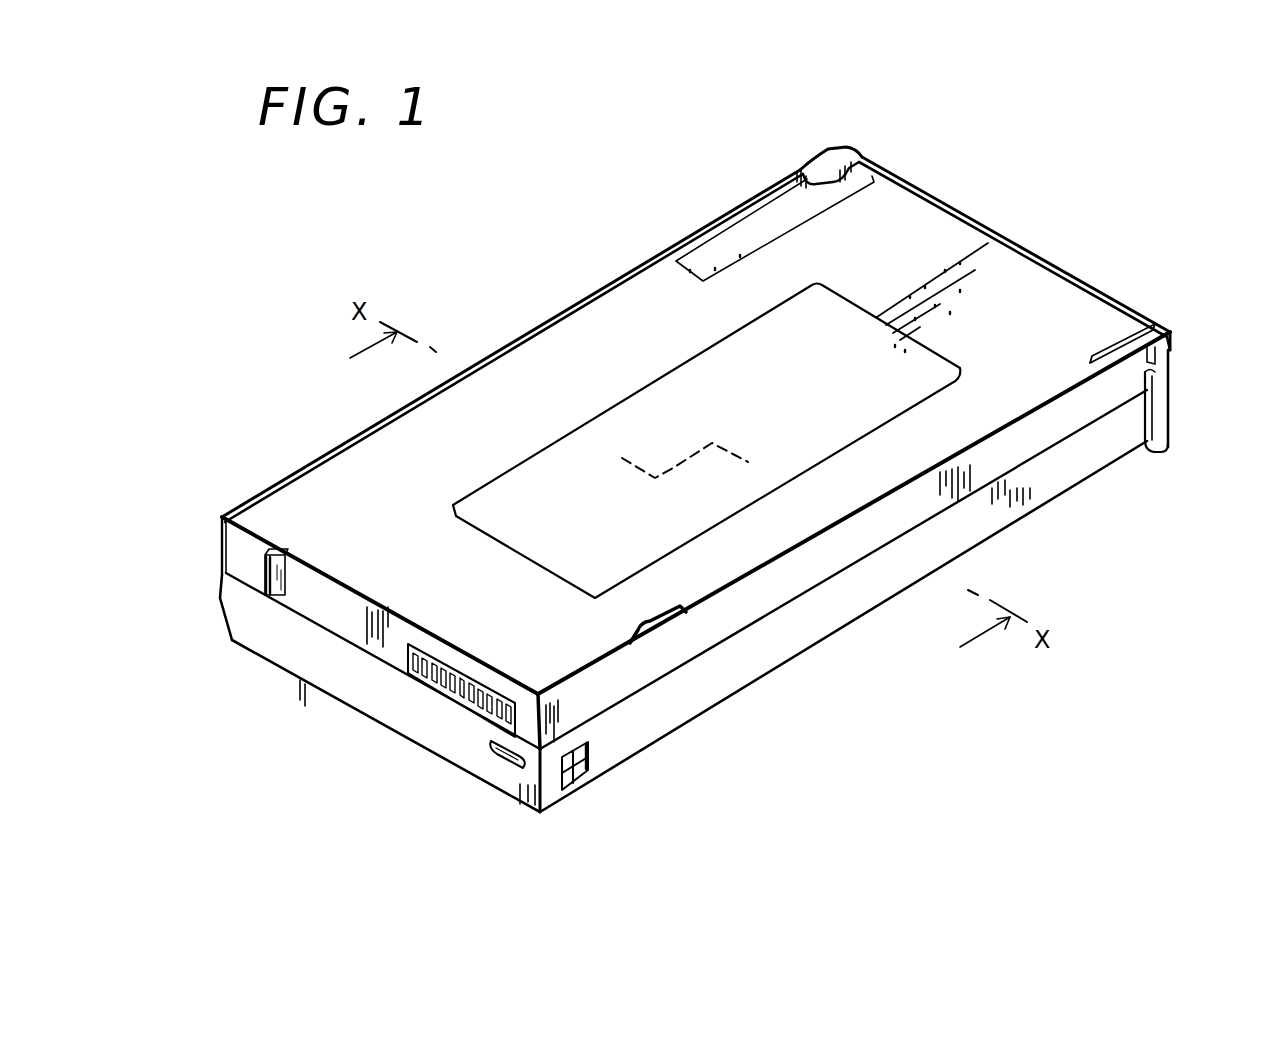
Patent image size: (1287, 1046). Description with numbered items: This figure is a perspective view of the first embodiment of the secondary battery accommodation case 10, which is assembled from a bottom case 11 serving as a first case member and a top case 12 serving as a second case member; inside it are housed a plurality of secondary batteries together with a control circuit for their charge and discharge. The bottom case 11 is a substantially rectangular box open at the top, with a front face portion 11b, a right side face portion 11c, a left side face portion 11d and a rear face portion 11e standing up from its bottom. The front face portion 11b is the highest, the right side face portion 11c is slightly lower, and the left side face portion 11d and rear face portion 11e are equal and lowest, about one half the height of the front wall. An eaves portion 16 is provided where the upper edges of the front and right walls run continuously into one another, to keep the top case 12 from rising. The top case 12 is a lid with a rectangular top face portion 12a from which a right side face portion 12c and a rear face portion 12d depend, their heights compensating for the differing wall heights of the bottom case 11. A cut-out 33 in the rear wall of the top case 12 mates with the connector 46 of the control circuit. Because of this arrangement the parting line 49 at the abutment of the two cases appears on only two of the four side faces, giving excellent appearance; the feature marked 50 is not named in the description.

The secondary battery accommodation case 10 is at (1180, 516).
The bottom case 11 is at (1053, 484).
The front face portion 11b is at (1172, 388).
The right side face portion 11c is at (222, 548).
The left side face portion 11d is at (692, 697).
The rear face portion 11e is at (375, 700).
The top case 12 is at (1087, 404).
The top face portion 12a is at (543, 357).
The right side face portion 12c is at (753, 600).
The rear face portion 12d is at (318, 608).
The eaves portion 16 is at (832, 150).
The cut-out 33 is at (494, 727).
The connector 46 is at (458, 690).
The parting line 49 is at (342, 647).
The rib 50 is at (1033, 253).